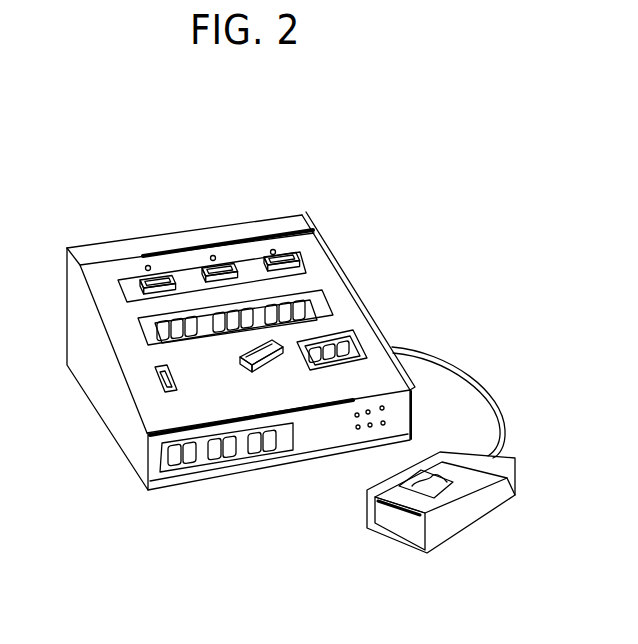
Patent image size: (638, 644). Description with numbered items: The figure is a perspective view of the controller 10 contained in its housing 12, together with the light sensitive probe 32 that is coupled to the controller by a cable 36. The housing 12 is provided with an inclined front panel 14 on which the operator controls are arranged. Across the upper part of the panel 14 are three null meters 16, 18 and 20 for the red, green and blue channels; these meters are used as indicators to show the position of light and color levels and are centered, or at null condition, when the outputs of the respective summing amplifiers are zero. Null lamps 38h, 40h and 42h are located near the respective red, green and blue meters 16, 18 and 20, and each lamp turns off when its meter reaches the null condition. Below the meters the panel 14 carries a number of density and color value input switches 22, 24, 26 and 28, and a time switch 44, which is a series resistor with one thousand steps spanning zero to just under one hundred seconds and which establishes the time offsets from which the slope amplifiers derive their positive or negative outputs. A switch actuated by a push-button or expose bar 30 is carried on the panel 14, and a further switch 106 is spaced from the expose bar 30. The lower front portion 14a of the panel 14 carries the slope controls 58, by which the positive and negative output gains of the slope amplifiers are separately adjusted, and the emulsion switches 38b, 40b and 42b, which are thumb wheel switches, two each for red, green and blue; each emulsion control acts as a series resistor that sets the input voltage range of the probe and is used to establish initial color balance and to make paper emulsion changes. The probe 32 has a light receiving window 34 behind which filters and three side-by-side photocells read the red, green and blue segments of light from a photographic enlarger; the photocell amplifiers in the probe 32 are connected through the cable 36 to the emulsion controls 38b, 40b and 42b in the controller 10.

The controller 10 is at (240, 347).
The housing 12 is at (330, 242).
The inclined front panel 14 is at (337, 288).
The lower front portion of panel 14a is at (397, 418).
The null meter 16 is at (142, 278).
The null meter 18 is at (207, 265).
The null meter 20 is at (283, 257).
The density and color value input switch 22 is at (157, 337).
The density and color value input switch 24 is at (223, 328).
The density and color value input switch 26 is at (283, 311).
The density and color value input switch 28 is at (227, 342).
The expose bar 30 is at (252, 365).
The probe 32 is at (441, 528).
The light receiving window 34 is at (440, 488).
The cable 36 is at (497, 408).
The null lamp 38h is at (148, 265).
The null lamp 40h is at (213, 255).
The null lamp 42h is at (273, 249).
The emulsion control 38b is at (195, 466).
The emulsion control 40b is at (235, 463).
The emulsion control 42b is at (281, 446).
The time switch 44 is at (352, 333).
The slope controls 58 is at (370, 428).
The switch 106 is at (158, 381).